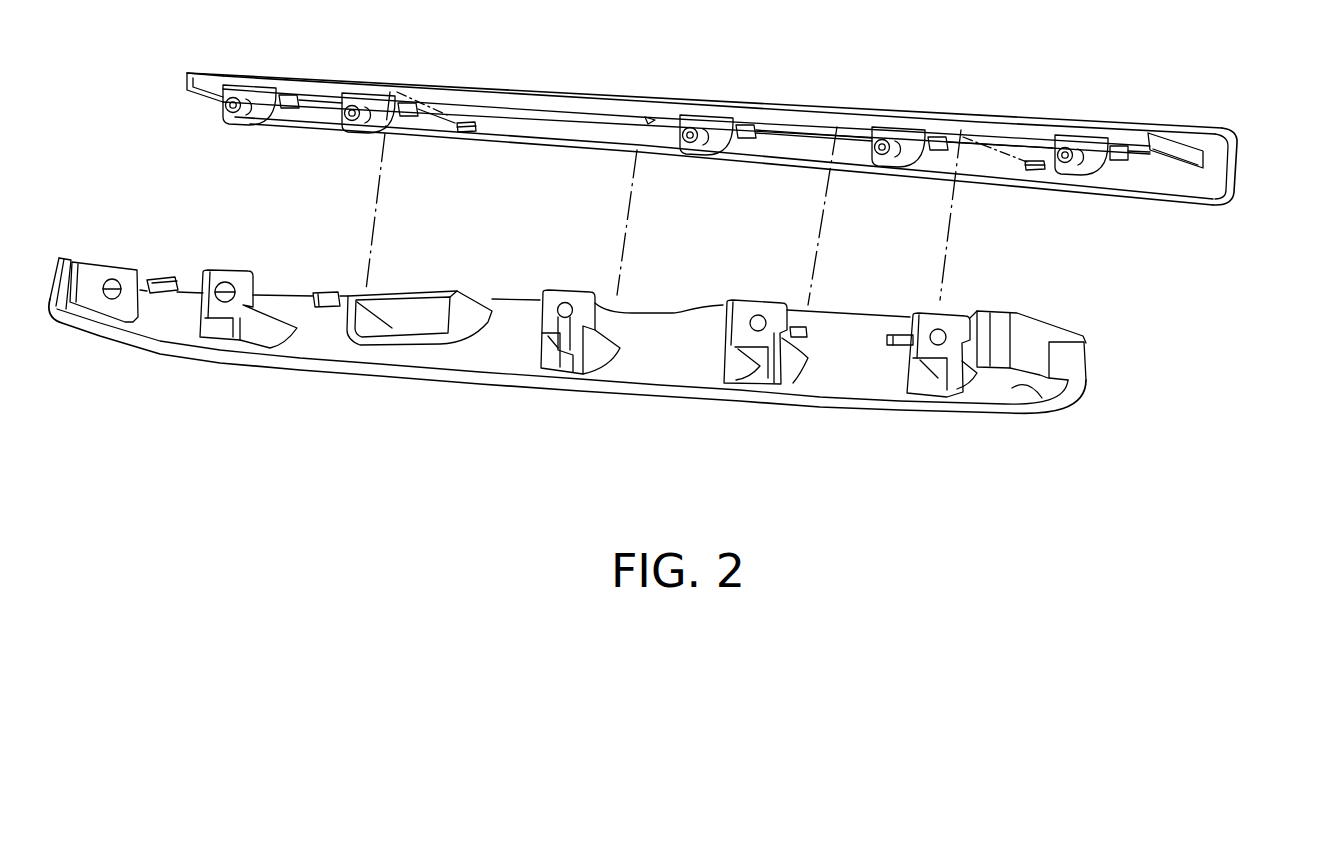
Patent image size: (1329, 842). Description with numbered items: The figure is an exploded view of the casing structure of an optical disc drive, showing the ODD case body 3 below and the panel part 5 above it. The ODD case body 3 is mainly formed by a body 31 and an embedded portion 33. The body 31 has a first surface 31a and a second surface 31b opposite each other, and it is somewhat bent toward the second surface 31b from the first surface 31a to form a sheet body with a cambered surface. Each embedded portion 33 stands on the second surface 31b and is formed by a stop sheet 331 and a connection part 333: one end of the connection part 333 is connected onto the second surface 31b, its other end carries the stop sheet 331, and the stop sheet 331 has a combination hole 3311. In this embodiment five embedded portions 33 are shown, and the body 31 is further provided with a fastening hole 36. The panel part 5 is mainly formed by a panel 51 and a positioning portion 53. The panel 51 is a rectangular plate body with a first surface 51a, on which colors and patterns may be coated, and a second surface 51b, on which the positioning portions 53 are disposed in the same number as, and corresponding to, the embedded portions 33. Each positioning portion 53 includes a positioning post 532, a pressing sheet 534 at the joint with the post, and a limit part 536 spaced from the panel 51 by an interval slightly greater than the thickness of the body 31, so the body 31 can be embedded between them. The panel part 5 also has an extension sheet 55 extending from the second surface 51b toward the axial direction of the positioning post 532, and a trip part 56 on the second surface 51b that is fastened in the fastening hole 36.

The ODD case body 3 is at (1095, 378).
The body 31 is at (1066, 400).
The first surface 31a is at (1088, 357).
The second surface 31b is at (1010, 390).
The embedded portion 33 is at (797, 450).
The stop sheet 331 is at (728, 337).
The combination hole 3311 is at (737, 315).
The connection part 333 is at (790, 364).
The fastening hole 36 is at (888, 337).
The panel part 5 is at (1006, 104).
The panel 51 is at (1223, 167).
The first surface 51a is at (1230, 181).
The second surface 51b is at (1187, 173).
The positioning portion 53 is at (716, 108).
The positioning post 532 is at (684, 129).
The pressing sheet 534 is at (720, 130).
The limit part 536 is at (795, 130).
The extension sheet 55 is at (1073, 126).
The trip part 56 is at (1035, 170).